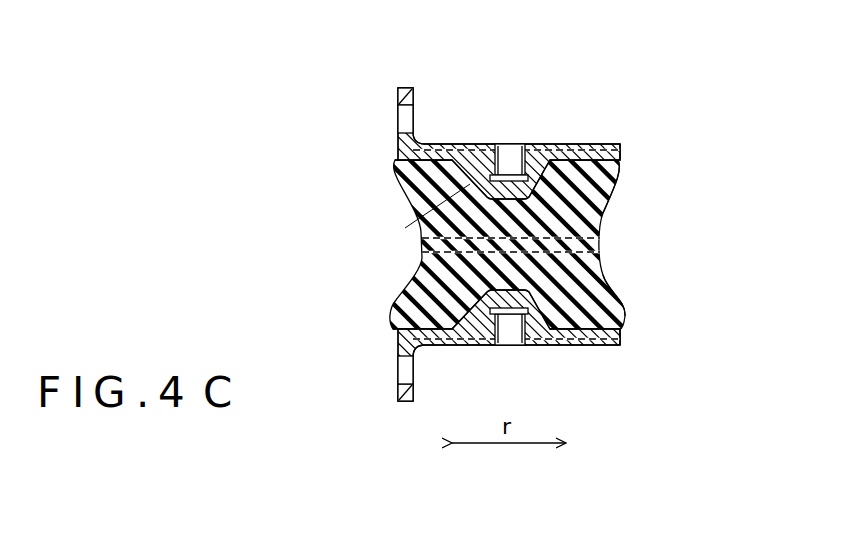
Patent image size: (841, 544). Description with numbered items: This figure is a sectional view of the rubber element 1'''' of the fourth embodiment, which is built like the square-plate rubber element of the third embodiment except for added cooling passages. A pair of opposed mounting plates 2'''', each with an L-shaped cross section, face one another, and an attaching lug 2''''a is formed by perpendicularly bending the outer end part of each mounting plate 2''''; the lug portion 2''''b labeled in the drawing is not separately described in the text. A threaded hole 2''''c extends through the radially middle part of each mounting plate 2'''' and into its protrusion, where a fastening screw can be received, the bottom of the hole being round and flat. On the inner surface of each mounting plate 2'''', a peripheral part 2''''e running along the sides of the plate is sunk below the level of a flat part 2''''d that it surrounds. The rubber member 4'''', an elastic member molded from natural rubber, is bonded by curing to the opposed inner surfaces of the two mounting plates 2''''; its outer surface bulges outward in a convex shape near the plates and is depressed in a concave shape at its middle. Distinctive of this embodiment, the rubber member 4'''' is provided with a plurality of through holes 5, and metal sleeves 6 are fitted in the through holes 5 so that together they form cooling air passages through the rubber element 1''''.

The rubber element 1'''' is at (449, 237).
The mounting plate 2'''' is at (449, 242).
The attaching lug 2''''a is at (363, 242).
The flange portion 2''''b is at (363, 240).
The threaded hole 2''''c is at (499, 245).
The flat part 2''''d is at (651, 239).
The peripheral part 2''''e is at (509, 248).
The rubber member 4'''' is at (471, 250).
The through holes 5 is at (597, 241).
The metal sleeves 6 is at (471, 250).